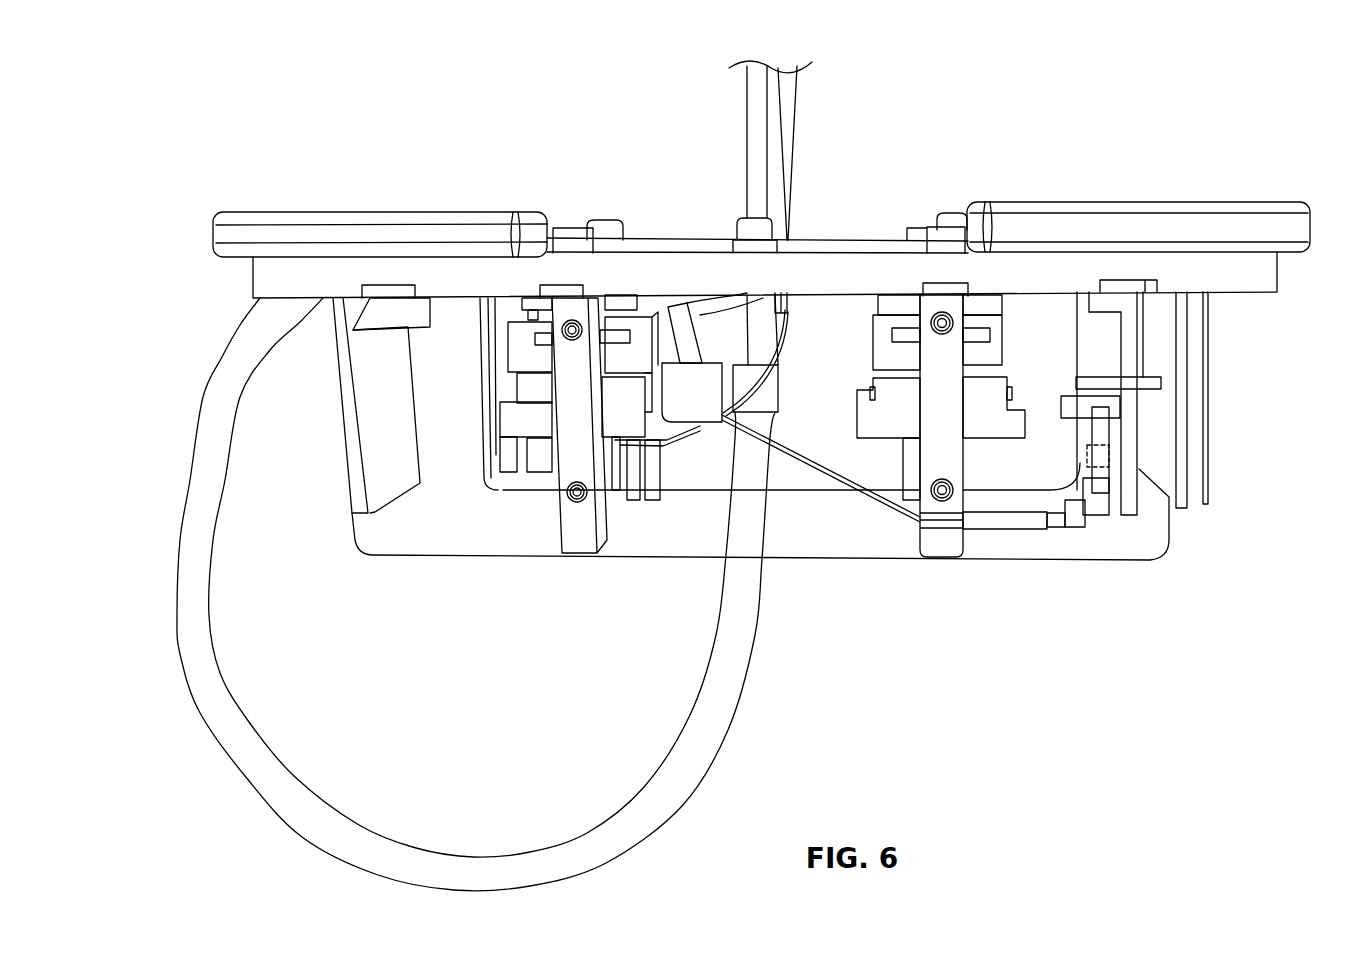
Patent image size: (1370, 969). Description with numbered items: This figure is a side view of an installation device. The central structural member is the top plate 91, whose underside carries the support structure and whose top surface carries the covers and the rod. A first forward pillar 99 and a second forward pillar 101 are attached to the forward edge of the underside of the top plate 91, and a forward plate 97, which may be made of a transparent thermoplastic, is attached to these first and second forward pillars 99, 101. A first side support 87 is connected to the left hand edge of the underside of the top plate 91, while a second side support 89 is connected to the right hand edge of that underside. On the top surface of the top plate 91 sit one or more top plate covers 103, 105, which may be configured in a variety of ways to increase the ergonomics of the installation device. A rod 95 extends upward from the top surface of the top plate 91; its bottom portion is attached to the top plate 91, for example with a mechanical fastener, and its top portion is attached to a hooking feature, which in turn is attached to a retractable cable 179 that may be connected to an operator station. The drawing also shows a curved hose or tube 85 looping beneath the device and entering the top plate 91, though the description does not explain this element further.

The tube 85 is at (177, 586).
The first side support 87 is at (362, 427).
The second side support 89 is at (1202, 445).
The top plate 91 is at (1265, 275).
The rod 95 is at (750, 120).
The forward plate 97 is at (1139, 545).
The first forward pillar 99 is at (573, 468).
The second forward pillar 101 is at (935, 540).
The top plate cover 103 is at (253, 215).
The top plate cover 105 is at (1264, 202).
The retractable cable 179 is at (795, 165).